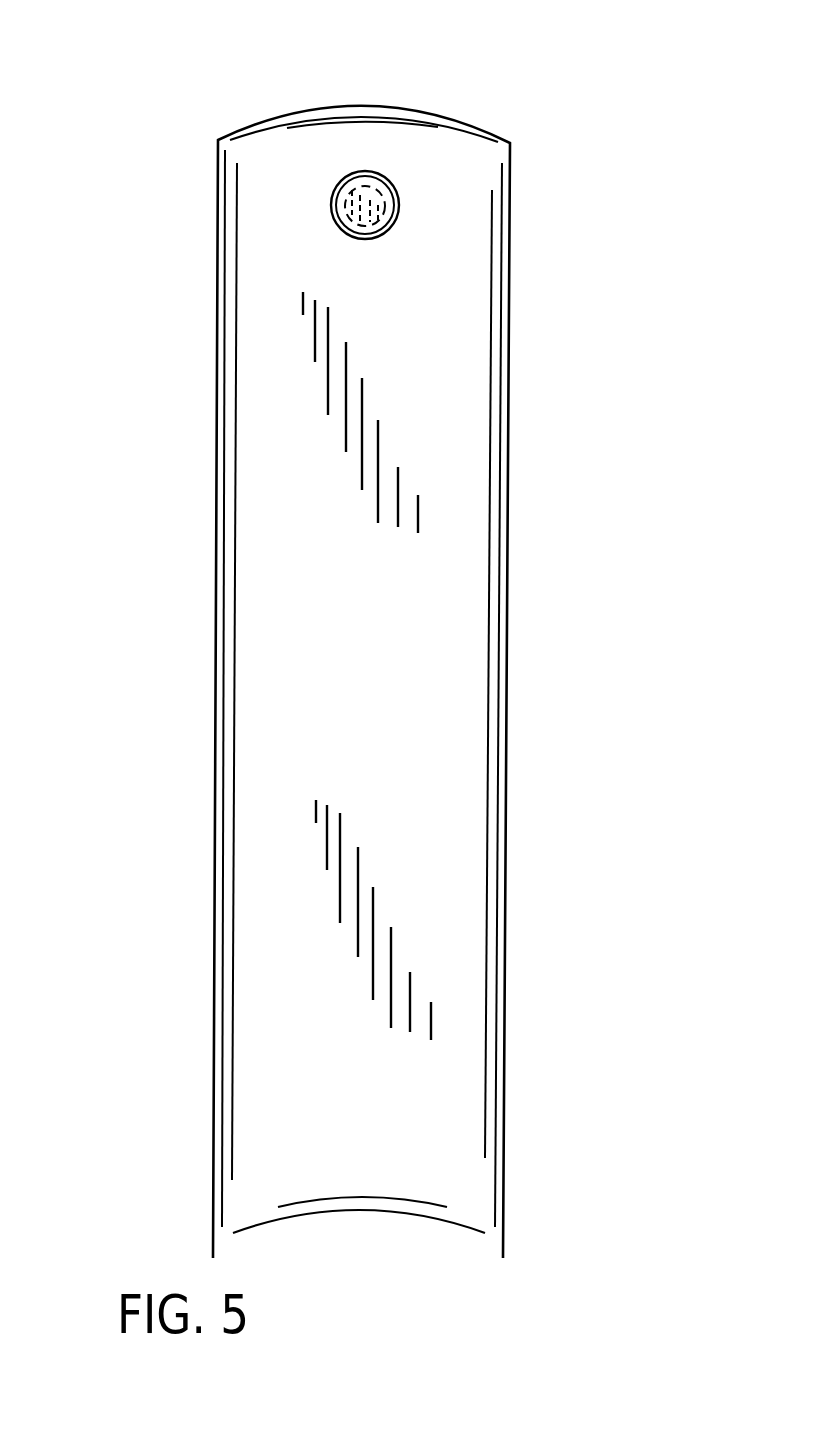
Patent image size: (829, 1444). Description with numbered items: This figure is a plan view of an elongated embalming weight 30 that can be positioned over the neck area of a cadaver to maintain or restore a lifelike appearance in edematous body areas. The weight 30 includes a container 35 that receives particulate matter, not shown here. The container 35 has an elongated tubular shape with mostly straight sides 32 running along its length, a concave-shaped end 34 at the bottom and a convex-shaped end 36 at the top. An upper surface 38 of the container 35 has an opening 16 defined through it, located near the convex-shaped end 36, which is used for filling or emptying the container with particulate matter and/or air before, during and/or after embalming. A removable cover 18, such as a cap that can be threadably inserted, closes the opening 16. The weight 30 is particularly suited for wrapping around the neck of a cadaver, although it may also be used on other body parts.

The weight 30 is at (185, 141).
The straight sides 32 is at (216, 468).
The concave-shaped end 34 is at (352, 1225).
The container 35 is at (512, 853).
The convex-shaped end 36 is at (360, 107).
The upper surface 38 is at (277, 658).
The opening 16 is at (340, 186).
The removable cover 18 is at (390, 185).